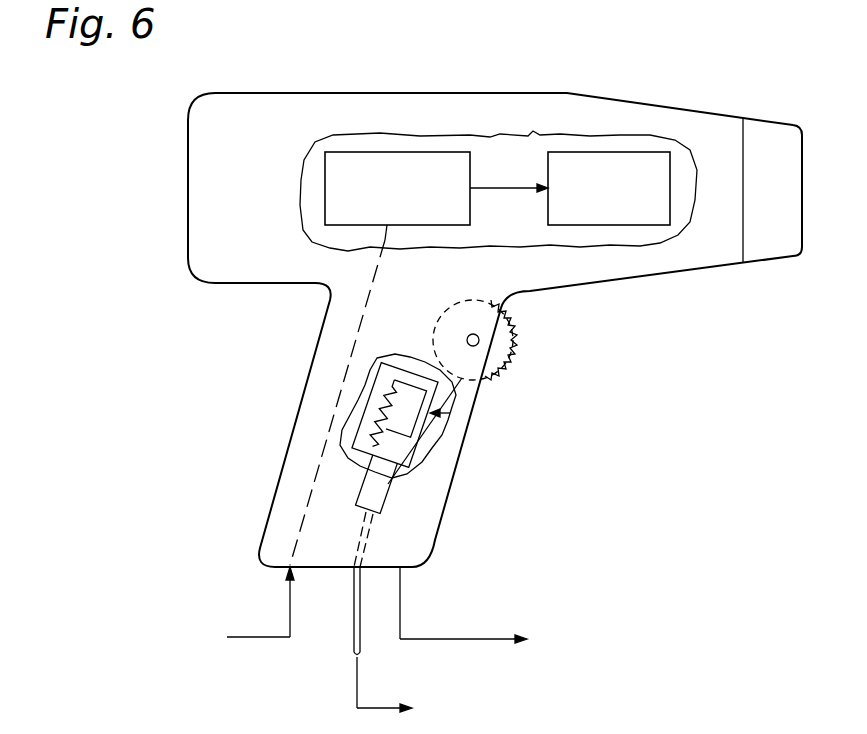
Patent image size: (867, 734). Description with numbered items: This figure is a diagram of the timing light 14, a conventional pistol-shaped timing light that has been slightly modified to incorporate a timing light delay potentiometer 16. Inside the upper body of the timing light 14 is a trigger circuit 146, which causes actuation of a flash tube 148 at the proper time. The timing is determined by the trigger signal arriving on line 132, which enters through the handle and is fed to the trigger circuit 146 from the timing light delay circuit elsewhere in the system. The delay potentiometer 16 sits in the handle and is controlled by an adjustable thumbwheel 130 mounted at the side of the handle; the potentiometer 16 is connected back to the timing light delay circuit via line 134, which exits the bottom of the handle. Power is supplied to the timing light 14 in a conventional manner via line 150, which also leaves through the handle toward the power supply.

The timing light 14 is at (557, 78).
The trigger circuit 146 is at (416, 158).
The flash tube 148 is at (600, 160).
The adjustable thumbwheel 130 is at (515, 343).
The timing light delay potentiometer 16 is at (431, 460).
The line 132 is at (290, 598).
The line 134 is at (350, 643).
The line 150 is at (402, 602).